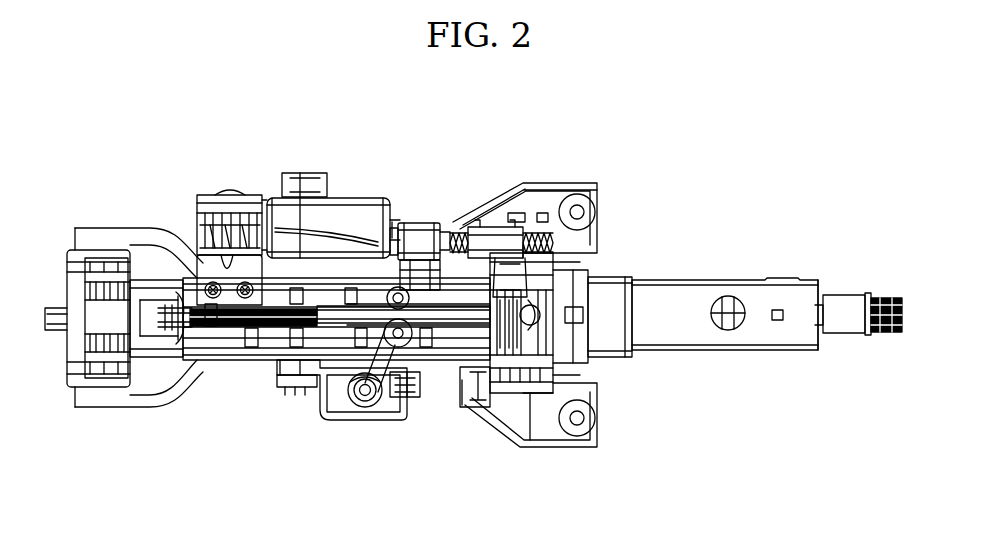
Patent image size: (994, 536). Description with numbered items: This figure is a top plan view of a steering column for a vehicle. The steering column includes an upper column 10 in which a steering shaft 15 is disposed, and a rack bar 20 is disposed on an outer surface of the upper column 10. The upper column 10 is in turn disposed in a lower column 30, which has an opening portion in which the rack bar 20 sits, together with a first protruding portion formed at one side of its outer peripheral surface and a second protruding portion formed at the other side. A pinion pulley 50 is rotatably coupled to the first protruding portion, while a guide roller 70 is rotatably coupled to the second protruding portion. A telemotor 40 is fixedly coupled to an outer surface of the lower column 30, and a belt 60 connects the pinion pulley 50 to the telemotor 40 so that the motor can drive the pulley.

The upper column 10 is at (662, 333).
The steering shaft 15 is at (843, 318).
The rack bar 20 is at (367, 317).
The lower column 30 is at (573, 293).
The telemotor 40 is at (340, 425).
The pinion pulley 50 is at (403, 342).
The belt 60 is at (370, 400).
The guide roller 70 is at (400, 287).